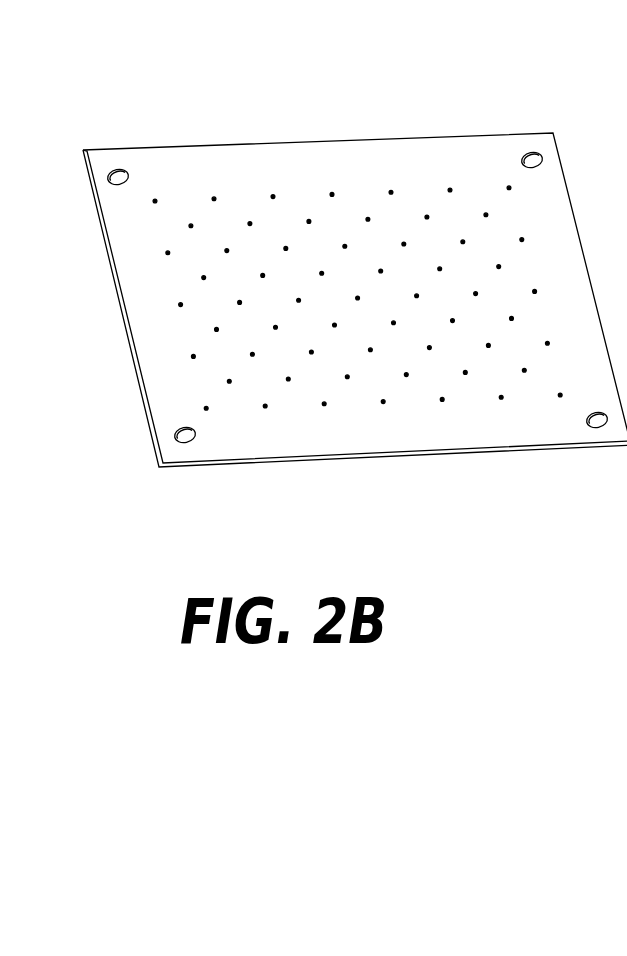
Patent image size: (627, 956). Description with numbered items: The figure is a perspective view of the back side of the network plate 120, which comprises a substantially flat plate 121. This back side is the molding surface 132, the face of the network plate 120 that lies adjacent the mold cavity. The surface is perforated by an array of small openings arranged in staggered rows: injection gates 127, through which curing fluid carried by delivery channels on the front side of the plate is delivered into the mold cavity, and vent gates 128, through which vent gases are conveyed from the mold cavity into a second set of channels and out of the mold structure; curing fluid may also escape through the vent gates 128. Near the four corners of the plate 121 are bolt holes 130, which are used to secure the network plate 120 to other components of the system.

The network plate 120 is at (341, 340).
The flat plate 121 is at (304, 447).
The injection gates 127 is at (166, 253).
The vent gates 128 is at (241, 301).
The bolt holes 130 is at (120, 170).
The molding surface 132 is at (472, 437).